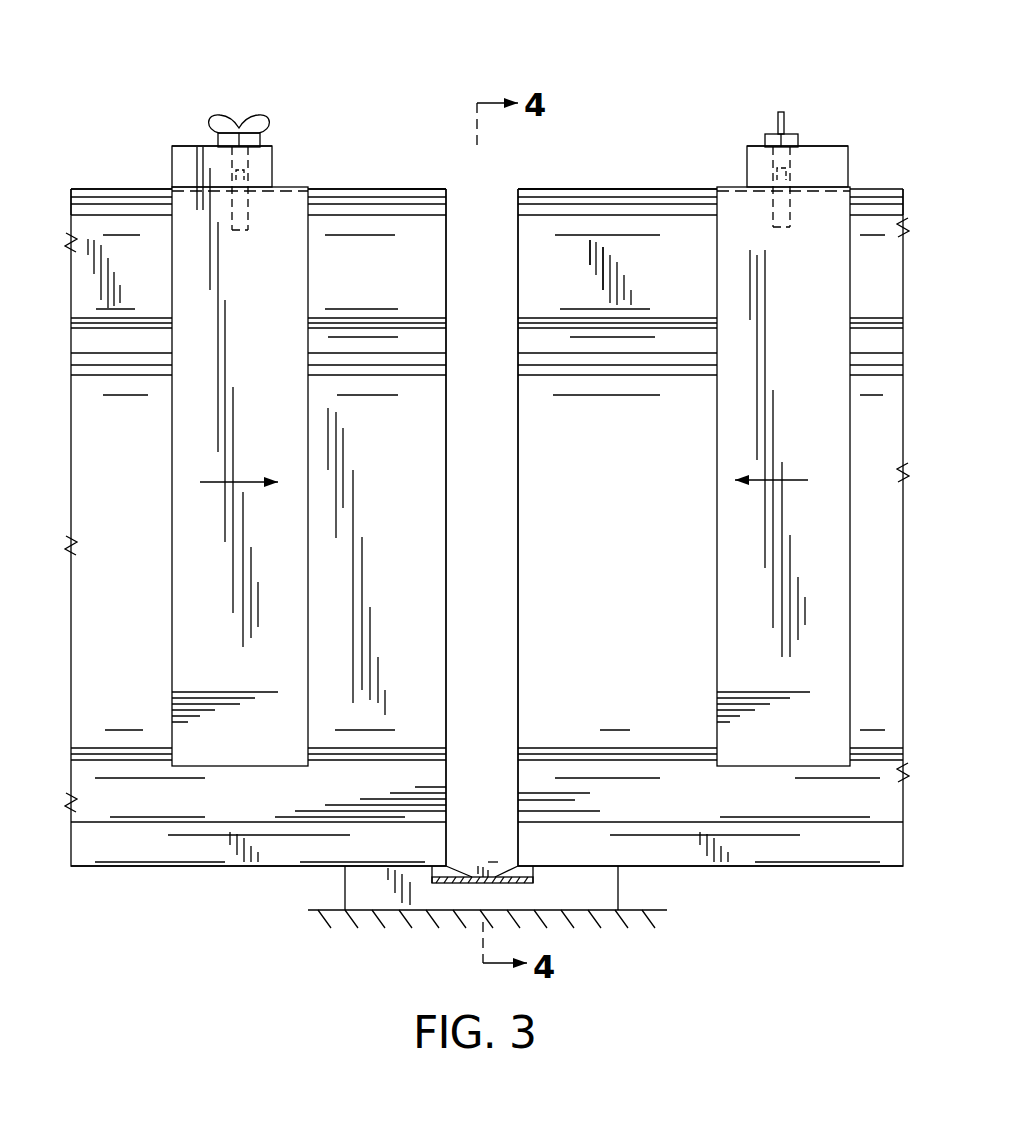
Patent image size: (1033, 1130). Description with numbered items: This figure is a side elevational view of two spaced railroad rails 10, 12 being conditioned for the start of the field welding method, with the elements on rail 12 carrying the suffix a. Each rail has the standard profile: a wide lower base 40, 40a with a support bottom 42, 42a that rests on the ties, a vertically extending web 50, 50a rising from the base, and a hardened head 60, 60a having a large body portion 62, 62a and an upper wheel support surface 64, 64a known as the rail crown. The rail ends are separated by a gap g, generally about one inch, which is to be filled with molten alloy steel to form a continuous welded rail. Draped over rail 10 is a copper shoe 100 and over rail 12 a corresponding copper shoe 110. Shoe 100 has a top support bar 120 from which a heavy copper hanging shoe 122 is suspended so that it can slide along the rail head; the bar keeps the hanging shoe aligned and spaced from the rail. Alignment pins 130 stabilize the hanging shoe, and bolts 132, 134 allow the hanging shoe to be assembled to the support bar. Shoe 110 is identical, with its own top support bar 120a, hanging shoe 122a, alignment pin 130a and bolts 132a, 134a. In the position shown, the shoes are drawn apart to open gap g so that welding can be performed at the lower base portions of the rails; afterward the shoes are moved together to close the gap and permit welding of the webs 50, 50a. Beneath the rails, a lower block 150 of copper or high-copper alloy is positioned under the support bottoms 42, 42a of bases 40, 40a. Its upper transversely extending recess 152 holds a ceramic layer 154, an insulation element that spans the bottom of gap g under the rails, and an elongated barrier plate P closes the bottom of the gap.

The rail 10 is at (647, 182).
The rail 12 is at (386, 184).
The lower base 40 is at (808, 856).
The lower base 40a is at (184, 858).
The support bottom 42 is at (748, 867).
The support bottom 42a is at (286, 867).
The vertically extending web 50 is at (628, 486).
The vertically extending web 50a is at (422, 487).
The head 60 is at (552, 223).
The head 60a is at (350, 225).
The body portion 62 is at (628, 255).
The body portion 62a is at (115, 253).
The upper wheel support surface 64 is at (867, 188).
The upper wheel support surface 64a is at (138, 188).
The copper shoe 100 is at (846, 140).
The copper shoe 110 is at (281, 143).
The top support bar 120 is at (747, 158).
The top support bar 120a is at (192, 147).
The hanging shoe 122 is at (728, 423).
The hanging shoe 122a is at (185, 428).
The alignment pin 130 is at (770, 198).
The alignment pin 130a is at (240, 206).
The bolt 132 is at (767, 137).
The bolt 132a is at (255, 118).
The bolt 134 is at (785, 112).
The bolt 134a is at (222, 117).
The lower block 150 is at (620, 893).
The upper transversely extending recess 152 is at (523, 868).
The ceramic layer 154 is at (455, 884).
The gap g is at (498, 612).
The barrier plate P is at (491, 860).